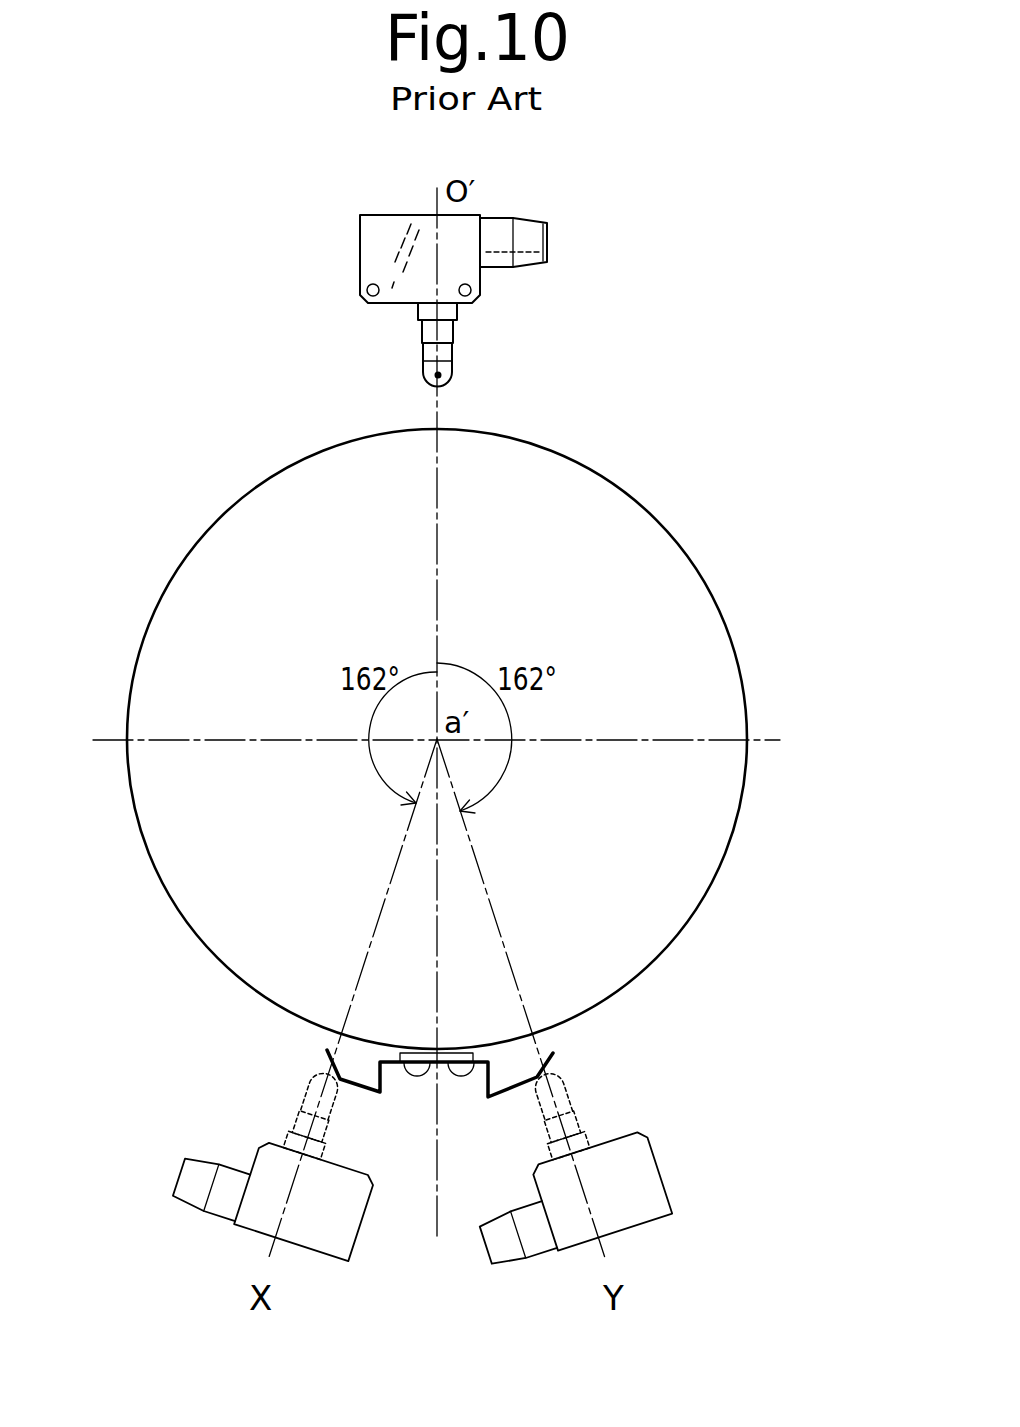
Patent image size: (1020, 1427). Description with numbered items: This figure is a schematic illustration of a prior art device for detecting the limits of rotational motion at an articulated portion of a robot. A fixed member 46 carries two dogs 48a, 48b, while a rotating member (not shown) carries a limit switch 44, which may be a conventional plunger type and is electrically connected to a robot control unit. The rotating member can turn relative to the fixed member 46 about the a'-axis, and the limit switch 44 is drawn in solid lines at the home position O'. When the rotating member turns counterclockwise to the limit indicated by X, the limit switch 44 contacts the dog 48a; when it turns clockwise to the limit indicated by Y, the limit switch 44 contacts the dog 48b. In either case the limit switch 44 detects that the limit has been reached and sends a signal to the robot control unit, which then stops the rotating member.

The limit switch 44 is at (360, 236).
The fixed member 46 is at (670, 533).
The dog 48a is at (327, 1052).
The dog 48b is at (553, 1053).